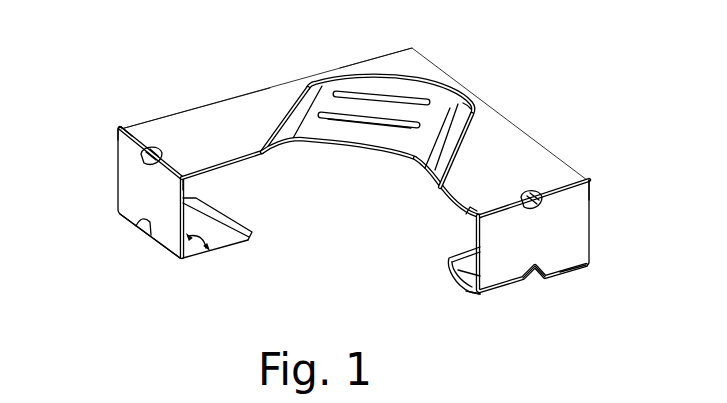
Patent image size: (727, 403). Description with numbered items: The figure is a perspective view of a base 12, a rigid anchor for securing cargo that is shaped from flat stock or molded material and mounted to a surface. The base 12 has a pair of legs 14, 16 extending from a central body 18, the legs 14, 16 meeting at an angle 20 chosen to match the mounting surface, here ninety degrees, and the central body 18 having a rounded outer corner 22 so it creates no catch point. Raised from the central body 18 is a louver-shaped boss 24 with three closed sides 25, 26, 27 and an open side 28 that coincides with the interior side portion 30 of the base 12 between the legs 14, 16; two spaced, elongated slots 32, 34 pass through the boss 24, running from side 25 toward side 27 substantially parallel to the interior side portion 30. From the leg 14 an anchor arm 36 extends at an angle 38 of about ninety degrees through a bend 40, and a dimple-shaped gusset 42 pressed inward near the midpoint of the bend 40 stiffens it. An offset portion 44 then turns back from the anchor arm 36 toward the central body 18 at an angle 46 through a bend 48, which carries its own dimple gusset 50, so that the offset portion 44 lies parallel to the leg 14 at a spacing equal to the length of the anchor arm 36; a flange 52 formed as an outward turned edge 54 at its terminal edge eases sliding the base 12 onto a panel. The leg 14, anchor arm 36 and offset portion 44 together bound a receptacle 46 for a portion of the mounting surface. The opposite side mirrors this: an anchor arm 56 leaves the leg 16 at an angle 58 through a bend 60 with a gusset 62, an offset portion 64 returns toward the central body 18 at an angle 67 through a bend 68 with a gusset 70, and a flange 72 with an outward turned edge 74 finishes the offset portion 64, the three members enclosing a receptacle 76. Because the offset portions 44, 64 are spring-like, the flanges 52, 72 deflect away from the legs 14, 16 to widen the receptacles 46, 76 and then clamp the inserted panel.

The base 12 is at (493, 117).
The leg 14 is at (229, 148).
The leg 16 is at (533, 173).
The central body 18 is at (292, 90).
The angle 20 is at (430, 68).
The rounded outer corner 22 is at (473, 93).
The boss 24 is at (437, 125).
The closed side 25 is at (290, 112).
The closed side 26 is at (337, 75).
The closed side 27 is at (453, 138).
The open side 28 is at (401, 167).
The interior side portion 30 is at (321, 143).
The slot 32 is at (368, 122).
The slot 34 is at (430, 110).
The anchor arm 36 is at (126, 193).
The angle 38 is at (188, 178).
The bend 40 is at (123, 137).
The gusset 42 is at (156, 147).
The offset portion 44 is at (221, 246).
The receptacle 46 is at (240, 198).
The bend 48 is at (160, 247).
The gusset 50 is at (142, 236).
The flange 52 is at (249, 243).
The outward turned edge 54 is at (243, 213).
The anchor arm 56 is at (567, 235).
The angle 58 is at (467, 210).
The bend 60 is at (591, 182).
The gusset 62 is at (567, 190).
The offset portion 64 is at (454, 272).
The angle 67 is at (468, 288).
The bend 68 is at (573, 282).
The gusset 70 is at (532, 277).
The flange 72 is at (480, 248).
The outward turned edge 74 is at (450, 256).
The receptacle 76 is at (436, 211).